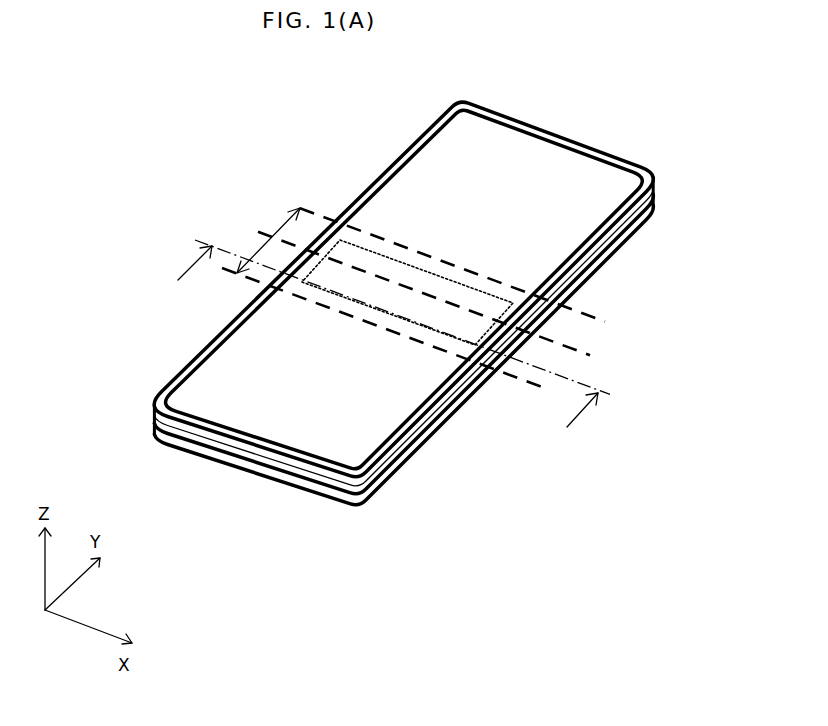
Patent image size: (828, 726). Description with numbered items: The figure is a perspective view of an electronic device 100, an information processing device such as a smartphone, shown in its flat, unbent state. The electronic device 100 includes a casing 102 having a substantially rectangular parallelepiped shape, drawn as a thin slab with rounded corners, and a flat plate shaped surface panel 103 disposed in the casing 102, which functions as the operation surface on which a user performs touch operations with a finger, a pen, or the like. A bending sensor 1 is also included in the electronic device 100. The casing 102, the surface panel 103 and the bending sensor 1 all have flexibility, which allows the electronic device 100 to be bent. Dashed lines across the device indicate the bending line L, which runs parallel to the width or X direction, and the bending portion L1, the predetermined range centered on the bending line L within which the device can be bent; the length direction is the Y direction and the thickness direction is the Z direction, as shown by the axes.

The electronic device 100 is at (192, 148).
The casing 102 is at (603, 261).
The surface panel 103 is at (578, 285).
The bending sensor 1 is at (572, 318).
The bending line L is at (416, 298).
The bending portion L1 is at (268, 240).